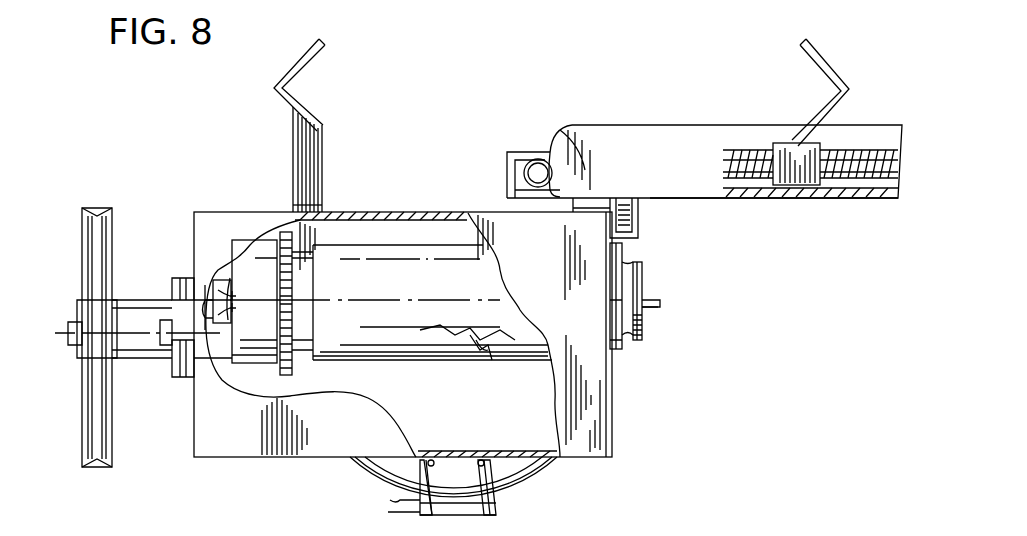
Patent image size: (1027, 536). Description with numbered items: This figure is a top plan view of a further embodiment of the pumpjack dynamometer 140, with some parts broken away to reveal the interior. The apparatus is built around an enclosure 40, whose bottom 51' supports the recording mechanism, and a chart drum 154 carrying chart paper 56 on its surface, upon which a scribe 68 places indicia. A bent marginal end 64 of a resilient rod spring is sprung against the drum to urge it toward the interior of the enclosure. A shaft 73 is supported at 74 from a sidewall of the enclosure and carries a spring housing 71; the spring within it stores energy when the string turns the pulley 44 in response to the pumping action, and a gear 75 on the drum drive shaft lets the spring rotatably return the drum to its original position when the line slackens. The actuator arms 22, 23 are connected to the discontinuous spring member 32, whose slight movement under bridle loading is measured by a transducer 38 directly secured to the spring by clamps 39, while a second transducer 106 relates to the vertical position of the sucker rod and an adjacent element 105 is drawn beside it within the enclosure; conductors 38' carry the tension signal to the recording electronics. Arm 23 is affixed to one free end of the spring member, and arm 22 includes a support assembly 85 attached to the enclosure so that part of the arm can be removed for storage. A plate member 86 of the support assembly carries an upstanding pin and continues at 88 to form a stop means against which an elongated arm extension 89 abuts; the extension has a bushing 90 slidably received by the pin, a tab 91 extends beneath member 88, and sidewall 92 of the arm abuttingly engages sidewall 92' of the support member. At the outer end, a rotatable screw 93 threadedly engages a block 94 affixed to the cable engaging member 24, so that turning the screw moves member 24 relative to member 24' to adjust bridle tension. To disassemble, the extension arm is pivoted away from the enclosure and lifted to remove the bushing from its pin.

The actuator arm 22 is at (483, 150).
The actuator arm 23 is at (332, 126).
The cable engaging member 24 is at (837, 85).
The cable engaging member 24' is at (281, 79).
The spring member 32 is at (538, 472).
The transducer 38 is at (491, 495).
The electrical conductors 38' is at (411, 517).
The clamps 39 is at (479, 460).
The enclosure 40 is at (622, 399).
The pulley 44 is at (86, 437).
The bottom of enclosure 51' is at (636, 416).
The chart paper 56 is at (408, 362).
The marginal end of spring 64 is at (662, 304).
The scribe 68 is at (486, 366).
The spring housing 71 is at (262, 262).
The shaft 73 is at (212, 325).
The shaft support 74 is at (178, 296).
The gear 75 is at (293, 372).
The support assembly 85 is at (507, 150).
The plate member 86 is at (548, 152).
The stop means 88 is at (640, 214).
The arm extension 89 is at (723, 203).
The bushing 90 is at (525, 183).
The tab 91 is at (628, 263).
The sidewall of arm 92 is at (774, 238).
The sidewall of support member 92' is at (614, 175).
The rotatable screw 93 is at (868, 158).
The block 94 is at (793, 180).
The hook 105 is at (232, 334).
The transducer 106 is at (238, 300).
The dynamometer 140 is at (696, 340).
The chart drum 154 is at (382, 376).